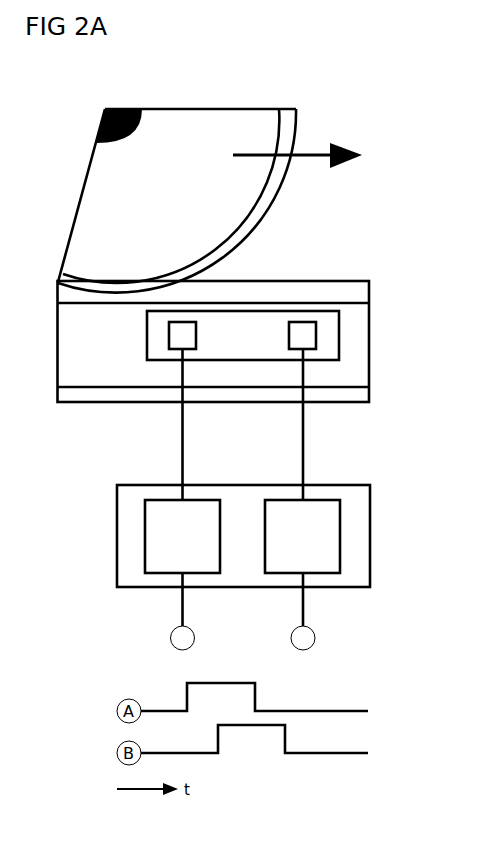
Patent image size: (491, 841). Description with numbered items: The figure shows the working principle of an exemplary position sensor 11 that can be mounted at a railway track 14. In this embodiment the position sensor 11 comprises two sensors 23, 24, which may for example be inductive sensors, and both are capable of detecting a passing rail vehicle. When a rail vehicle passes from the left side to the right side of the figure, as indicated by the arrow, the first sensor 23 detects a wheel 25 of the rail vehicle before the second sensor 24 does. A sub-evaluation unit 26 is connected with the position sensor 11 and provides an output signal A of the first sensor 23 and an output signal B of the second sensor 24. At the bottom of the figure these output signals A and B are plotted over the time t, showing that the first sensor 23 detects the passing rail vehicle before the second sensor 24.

The position sensor 11 is at (340, 322).
The railway track 14 is at (369, 281).
The first sensor 23 is at (170, 333).
The second sensor 24 is at (318, 335).
The wheel 25 is at (275, 197).
The sub-evaluation unit 26 is at (370, 510).